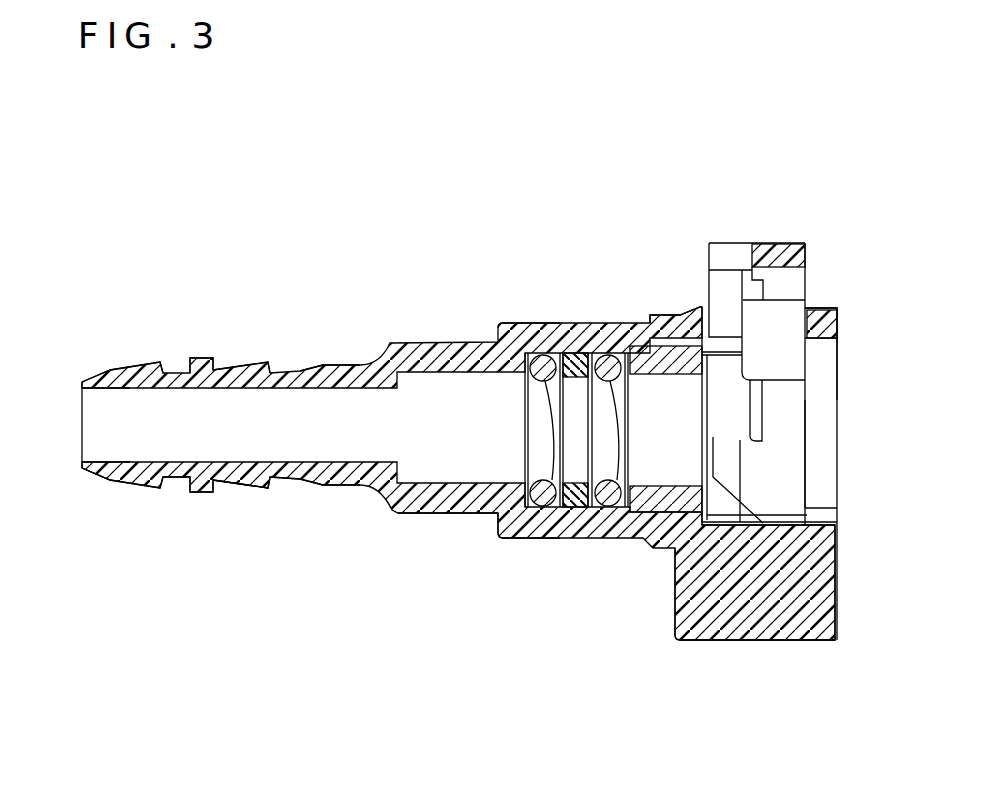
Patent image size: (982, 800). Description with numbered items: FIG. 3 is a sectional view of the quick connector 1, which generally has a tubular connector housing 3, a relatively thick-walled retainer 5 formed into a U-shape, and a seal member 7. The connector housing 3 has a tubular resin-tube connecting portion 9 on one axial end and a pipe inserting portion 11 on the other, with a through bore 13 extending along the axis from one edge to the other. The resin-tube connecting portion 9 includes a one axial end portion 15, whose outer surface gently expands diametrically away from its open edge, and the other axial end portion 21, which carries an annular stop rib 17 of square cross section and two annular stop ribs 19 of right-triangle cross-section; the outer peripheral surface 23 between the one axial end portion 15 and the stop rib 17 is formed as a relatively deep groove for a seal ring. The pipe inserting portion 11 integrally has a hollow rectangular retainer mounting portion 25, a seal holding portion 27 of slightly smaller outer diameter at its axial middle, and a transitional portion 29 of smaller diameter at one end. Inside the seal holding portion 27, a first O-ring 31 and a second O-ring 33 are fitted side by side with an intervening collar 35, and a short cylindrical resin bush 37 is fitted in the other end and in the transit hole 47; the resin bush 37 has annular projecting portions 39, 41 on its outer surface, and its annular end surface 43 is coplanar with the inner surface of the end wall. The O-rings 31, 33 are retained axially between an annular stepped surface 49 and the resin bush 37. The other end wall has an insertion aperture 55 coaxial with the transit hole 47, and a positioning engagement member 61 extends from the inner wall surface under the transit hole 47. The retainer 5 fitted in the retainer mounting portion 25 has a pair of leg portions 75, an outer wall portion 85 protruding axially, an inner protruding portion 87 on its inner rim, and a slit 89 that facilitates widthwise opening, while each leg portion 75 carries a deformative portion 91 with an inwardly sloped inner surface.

The quick connector 1 is at (108, 161).
The connector housing 3 is at (377, 590).
The retainer 5 is at (808, 410).
The seal member 7 is at (517, 388).
The resin-tube connecting portion 9 is at (152, 500).
The pipe inserting portion 11 is at (505, 547).
The through bore 13 is at (130, 460).
The one axial end portion 15 is at (122, 355).
The annular stop rib 17 is at (200, 357).
The annular stop ribs 19 is at (260, 367).
The other axial end portion 21 is at (228, 498).
The outer peripheral surface 23 is at (178, 368).
The retainer mounting portion 25 is at (822, 313).
The seal holding portion 27 is at (560, 327).
The transitional portion 29 is at (440, 500).
The first O-ring 31 is at (518, 322).
The second O-ring 33 is at (592, 507).
The collar 35 is at (583, 327).
The resin bush 37 is at (637, 323).
The annular projecting portion 39 is at (698, 527).
The annular projecting portion 41 is at (665, 512).
The annular end surface 43 is at (712, 372).
The transit hole 47 is at (735, 525).
The annular stepped surface 49 is at (545, 507).
The insertion aperture 55 is at (818, 340).
The positioning engagement member 61 is at (757, 590).
The leg portions 75 is at (787, 485).
The outer wall portion 85 is at (723, 290).
The inner protruding portion 87 is at (750, 310).
The slit 89 is at (782, 273).
The deformative portion 91 is at (727, 458).